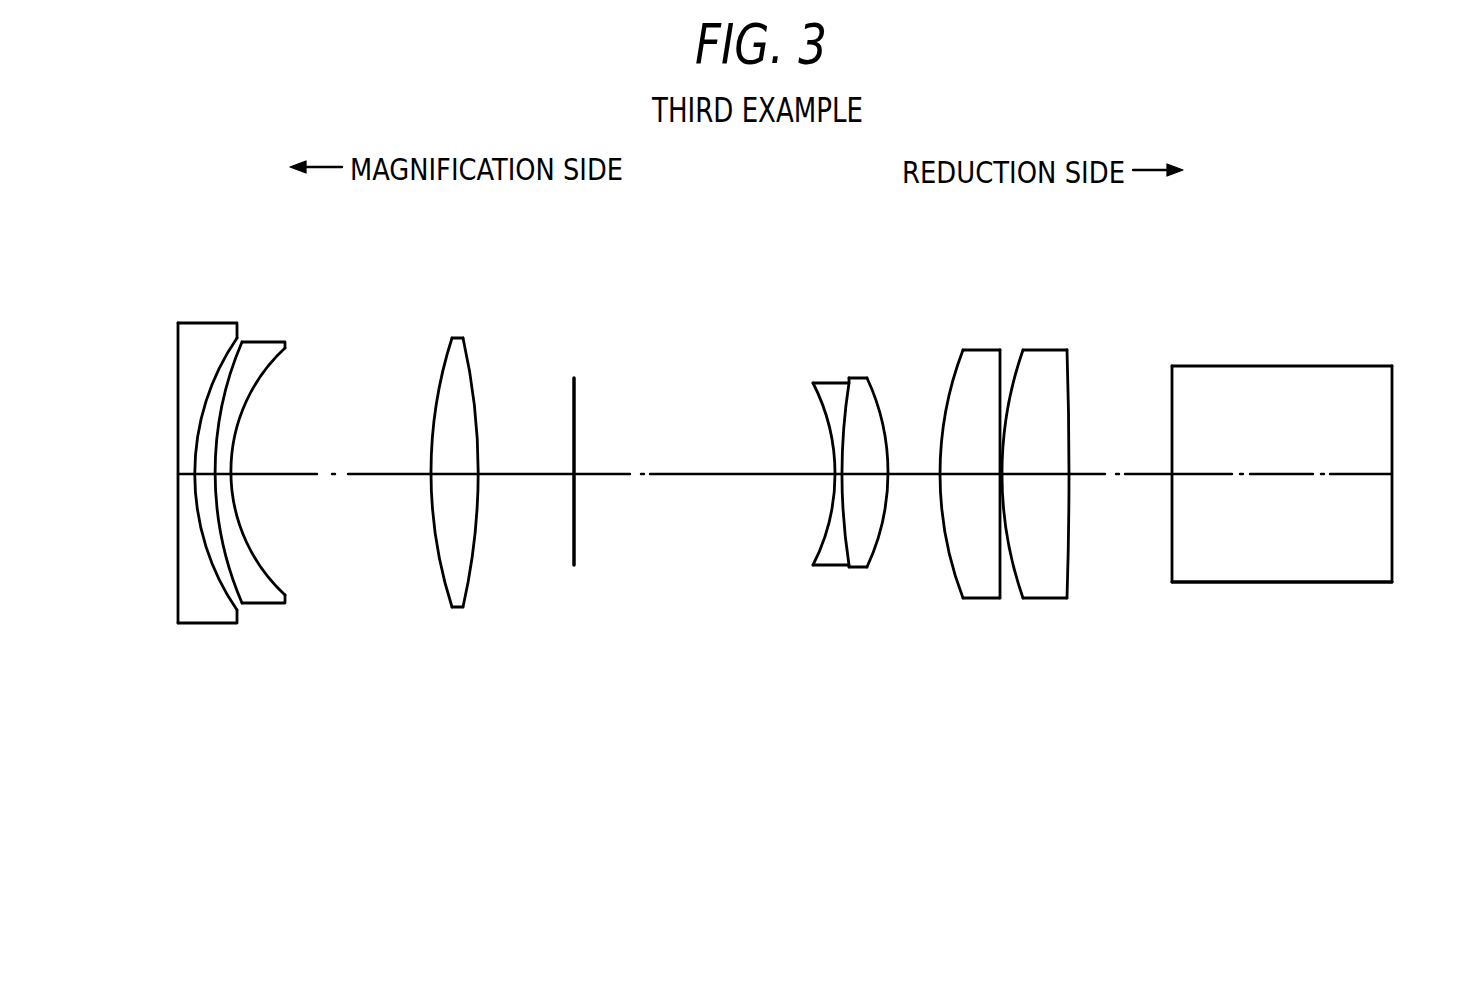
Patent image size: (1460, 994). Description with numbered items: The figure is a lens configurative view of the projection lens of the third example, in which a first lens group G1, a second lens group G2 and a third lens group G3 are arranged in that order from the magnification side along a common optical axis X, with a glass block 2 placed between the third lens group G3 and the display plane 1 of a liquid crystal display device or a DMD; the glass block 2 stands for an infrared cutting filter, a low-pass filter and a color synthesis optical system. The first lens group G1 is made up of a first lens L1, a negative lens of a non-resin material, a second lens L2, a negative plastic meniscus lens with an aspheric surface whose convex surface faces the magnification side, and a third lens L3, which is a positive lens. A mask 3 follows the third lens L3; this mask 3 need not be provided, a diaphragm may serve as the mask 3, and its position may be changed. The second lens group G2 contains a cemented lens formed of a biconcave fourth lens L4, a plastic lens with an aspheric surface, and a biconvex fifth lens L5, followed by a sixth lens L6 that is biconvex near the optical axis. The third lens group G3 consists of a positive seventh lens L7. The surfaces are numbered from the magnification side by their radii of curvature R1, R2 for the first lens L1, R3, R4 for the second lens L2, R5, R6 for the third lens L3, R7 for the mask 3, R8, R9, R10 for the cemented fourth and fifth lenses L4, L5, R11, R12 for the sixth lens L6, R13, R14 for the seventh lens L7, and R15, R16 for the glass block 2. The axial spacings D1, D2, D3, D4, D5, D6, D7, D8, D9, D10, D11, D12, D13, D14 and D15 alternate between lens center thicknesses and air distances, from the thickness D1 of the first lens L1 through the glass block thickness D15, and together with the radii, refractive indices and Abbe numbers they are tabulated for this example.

The radius of curvature of first surface R1 is at (177, 457).
The radius of curvature of second surface R2 is at (200, 427).
The radius of curvature of third surface R3 is at (211, 457).
The radius of curvature of fourth surface R4 is at (242, 467).
The radius of curvature of fifth surface R5 is at (430, 460).
The radius of curvature of sixth surface R6 is at (479, 448).
The radius of curvature of seventh surface R7 is at (574, 392).
The radius of curvature of eighth surface R8 is at (833, 463).
The radius of curvature of ninth surface R9 is at (842, 428).
The radius of curvature of tenth surface R10 is at (885, 408).
The radius of curvature of eleventh surface R11 is at (938, 463).
The radius of curvature of twelfth surface R12 is at (1003, 447).
The radius of curvature of thirteenth surface R13 is at (1003, 450).
The radius of curvature of fourteenth surface R14 is at (1068, 463).
The radius of curvature of fifteenth surface R15 is at (1172, 385).
The radius of curvature of sixteenth surface R16 is at (1392, 395).
The center thickness of first lens D1 is at (184, 483).
The air distance between first and second lenses D2 is at (200, 483).
The center thickness of second lens D3 is at (228, 483).
The air distance between second and third lenses D4 is at (333, 495).
The center thickness of third lens D5 is at (459, 498).
The air distance between third lens and mask D6 is at (526, 498).
The air distance between mask and fourth lens D7 is at (693, 497).
The center thickness of fourth lens D8 is at (838, 490).
The center thickness of fifth lens D9 is at (855, 477).
The air distance between fifth and sixth lenses D10 is at (919, 498).
The center thickness of sixth lens D11 is at (972, 498).
The air distance between sixth and seventh lenses D12 is at (1003, 477).
The center thickness of seventh lens D13 is at (1040, 498).
The air distance between seventh lens and glass block D14 is at (1119, 498).
The center thickness of glass block D15 is at (1270, 496).
The first lens L1 is at (182, 505).
The second lens L2 is at (256, 479).
The third lens L3 is at (451, 506).
The fourth lens L4 is at (813, 479).
The fifth lens L5 is at (879, 485).
The sixth lens L6 is at (950, 492).
The seventh lens L7 is at (1062, 482).
The first lens group G1 is at (500, 270).
The second lens group G2 is at (1002, 270).
The third lens group G3 is at (1118, 270).
The optical axis X is at (710, 470).
The display plane 1 is at (1286, 477).
The glass block 2 is at (1284, 565).
The mask 3 is at (584, 474).